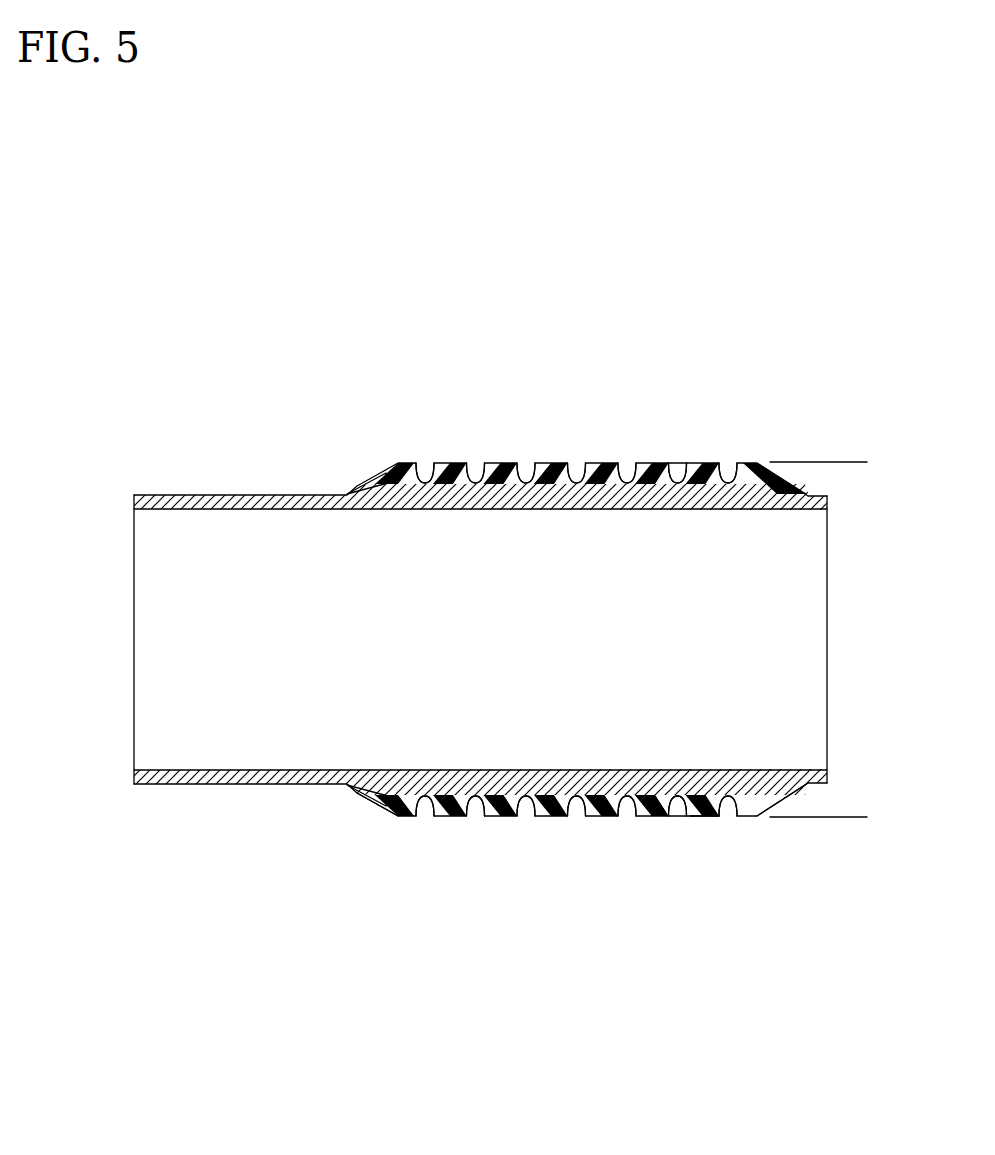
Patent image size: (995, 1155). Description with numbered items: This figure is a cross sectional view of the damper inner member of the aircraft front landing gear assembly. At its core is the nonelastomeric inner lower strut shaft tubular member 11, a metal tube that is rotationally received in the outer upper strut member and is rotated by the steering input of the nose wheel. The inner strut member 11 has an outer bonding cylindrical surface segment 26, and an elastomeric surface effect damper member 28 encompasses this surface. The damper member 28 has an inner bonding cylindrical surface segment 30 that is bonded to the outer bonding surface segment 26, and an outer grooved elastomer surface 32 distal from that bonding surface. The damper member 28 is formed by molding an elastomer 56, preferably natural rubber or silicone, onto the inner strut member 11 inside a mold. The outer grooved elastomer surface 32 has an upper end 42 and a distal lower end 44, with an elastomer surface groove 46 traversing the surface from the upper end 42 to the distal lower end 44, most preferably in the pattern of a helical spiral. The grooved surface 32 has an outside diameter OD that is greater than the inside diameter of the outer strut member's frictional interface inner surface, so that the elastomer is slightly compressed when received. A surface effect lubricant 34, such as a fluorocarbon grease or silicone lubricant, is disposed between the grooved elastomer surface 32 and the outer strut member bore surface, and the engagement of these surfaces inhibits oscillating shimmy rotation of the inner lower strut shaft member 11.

The nonelastomeric inner lower strut shaft tubular member 11 is at (141, 808).
The outer bonding cylindrical surface segment 26 is at (431, 476).
The elastomeric surface effect damper member 28 is at (763, 446).
The inner bonding cylindrical surface segment 30 is at (405, 769).
The outer grooved elastomer surface 32 is at (683, 472).
The surface effect lubricant 34 is at (707, 818).
The upper end 42 is at (748, 815).
The distal lower end 44 is at (393, 812).
The elastomer surface groove 46 is at (421, 477).
The elastomer 56 is at (347, 493).
The outside diameter OD is at (851, 488).